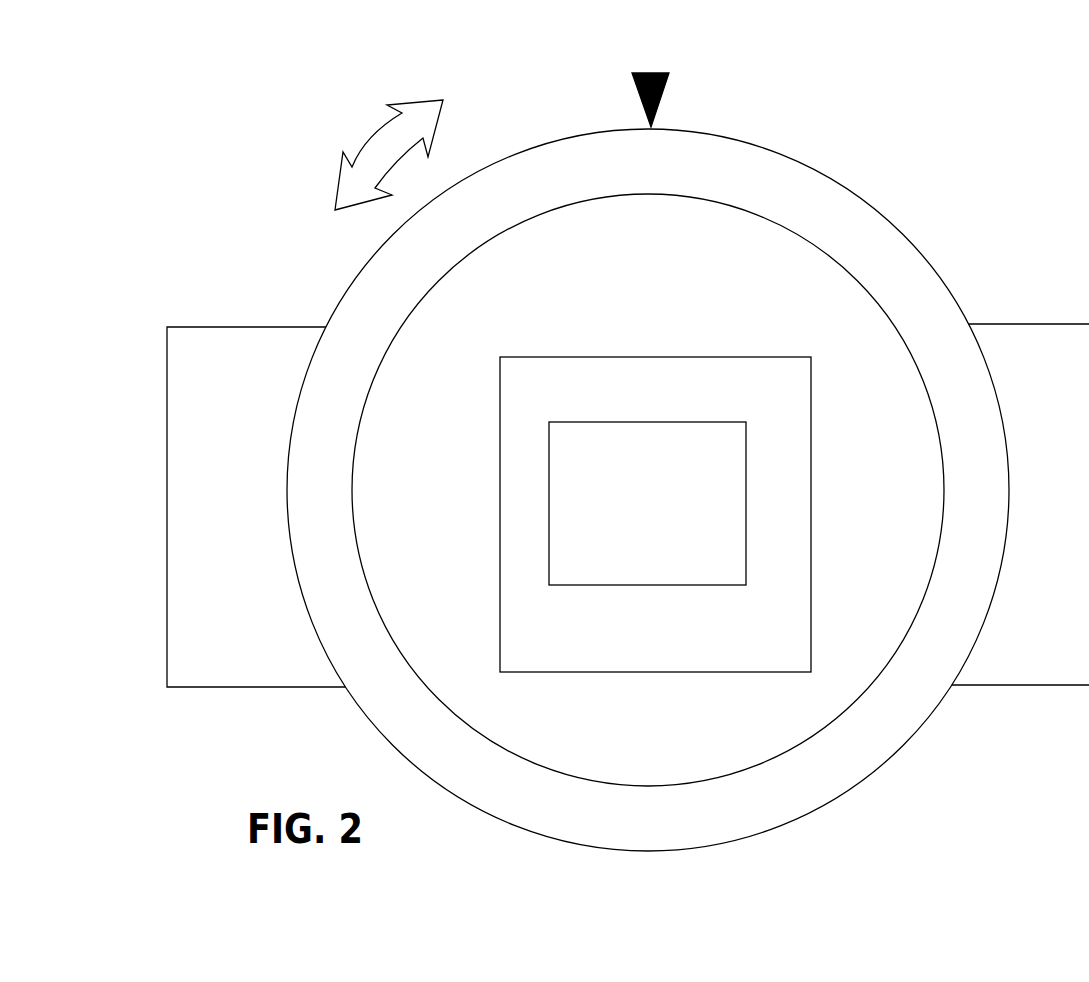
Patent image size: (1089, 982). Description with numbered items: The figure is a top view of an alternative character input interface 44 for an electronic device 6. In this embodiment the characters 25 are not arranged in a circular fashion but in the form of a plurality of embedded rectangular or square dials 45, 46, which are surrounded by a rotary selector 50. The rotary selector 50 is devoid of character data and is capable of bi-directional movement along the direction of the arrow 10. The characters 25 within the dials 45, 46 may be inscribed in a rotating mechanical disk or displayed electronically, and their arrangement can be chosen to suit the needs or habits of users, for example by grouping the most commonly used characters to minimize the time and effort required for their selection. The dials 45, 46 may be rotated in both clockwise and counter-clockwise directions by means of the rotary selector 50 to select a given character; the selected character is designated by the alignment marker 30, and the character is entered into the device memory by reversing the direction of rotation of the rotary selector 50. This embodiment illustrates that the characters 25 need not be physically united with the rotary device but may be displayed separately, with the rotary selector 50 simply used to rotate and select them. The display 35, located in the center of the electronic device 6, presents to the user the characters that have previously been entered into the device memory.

The electronic device 6 is at (235, 687).
The arrow 10 is at (373, 135).
The characters 25 is at (815, 152).
The alignment marker 30 is at (662, 102).
The display 35 is at (647, 503).
The character input interface 44 is at (696, 386).
The dial 45 is at (678, 210).
The dial 46 is at (765, 365).
The rotary selector 50 is at (375, 305).